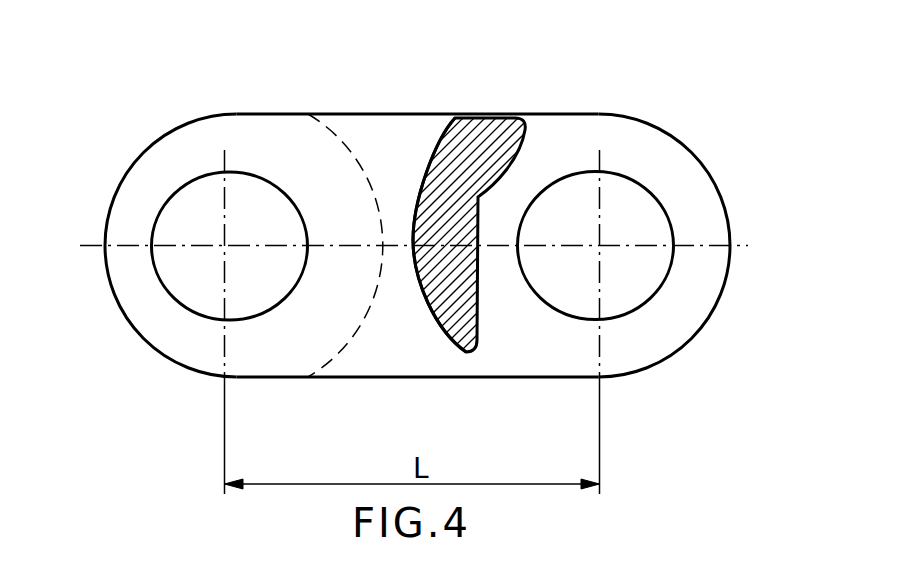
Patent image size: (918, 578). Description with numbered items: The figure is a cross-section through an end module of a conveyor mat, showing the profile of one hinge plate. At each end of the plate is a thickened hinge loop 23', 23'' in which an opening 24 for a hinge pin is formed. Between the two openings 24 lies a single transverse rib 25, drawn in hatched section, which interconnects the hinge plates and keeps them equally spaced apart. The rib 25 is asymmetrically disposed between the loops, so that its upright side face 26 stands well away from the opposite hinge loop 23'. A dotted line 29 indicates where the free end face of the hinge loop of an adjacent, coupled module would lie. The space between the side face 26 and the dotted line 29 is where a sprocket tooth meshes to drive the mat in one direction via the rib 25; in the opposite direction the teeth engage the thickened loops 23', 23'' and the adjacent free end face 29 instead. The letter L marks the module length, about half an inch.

The hinge loop 23' is at (136, 245).
The hinge loop 23'' is at (714, 245).
The opening 24 is at (196, 259).
The transverse rib 25 is at (490, 137).
The side face 26 is at (425, 310).
The dotted line 29 is at (345, 145).